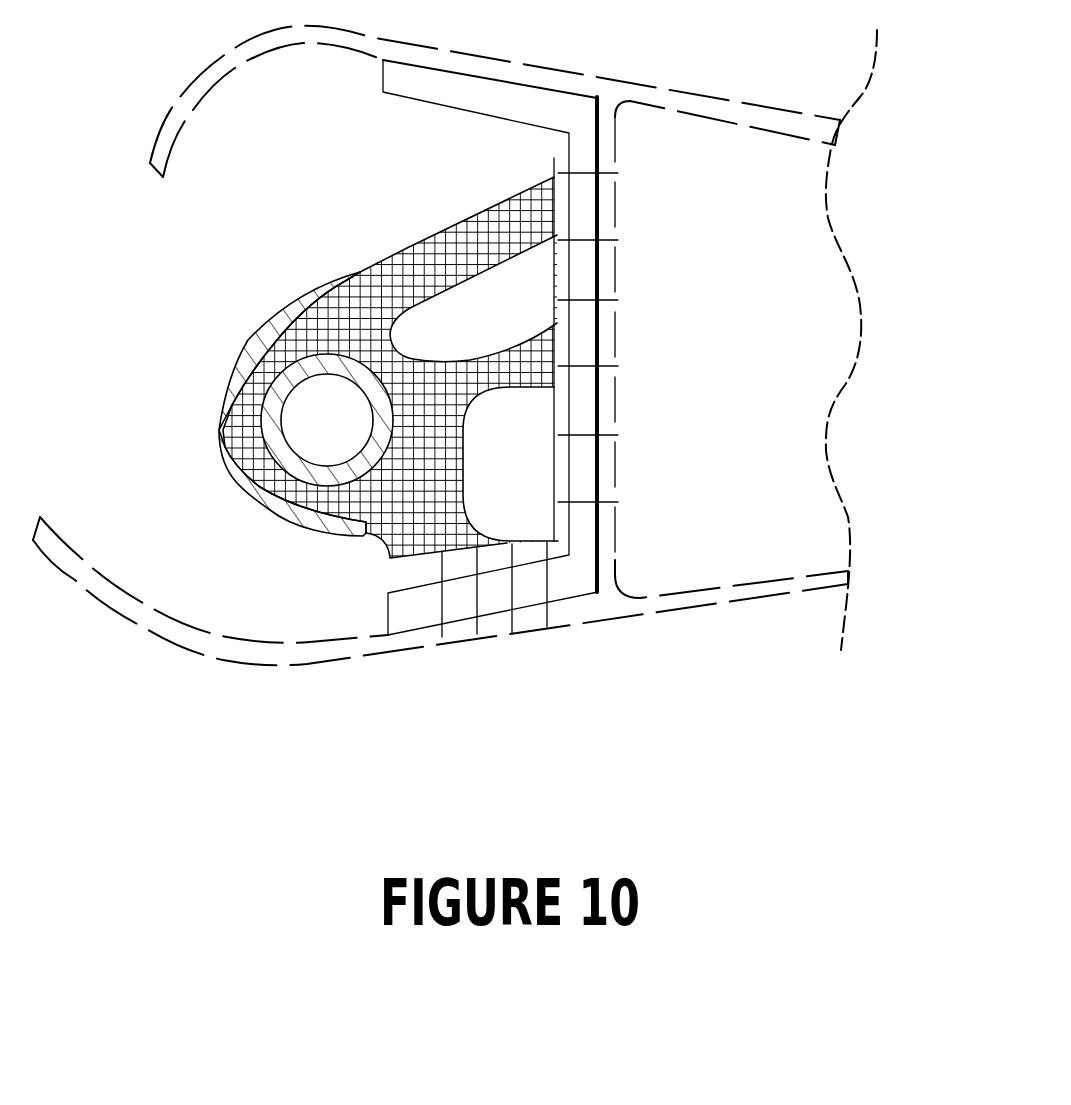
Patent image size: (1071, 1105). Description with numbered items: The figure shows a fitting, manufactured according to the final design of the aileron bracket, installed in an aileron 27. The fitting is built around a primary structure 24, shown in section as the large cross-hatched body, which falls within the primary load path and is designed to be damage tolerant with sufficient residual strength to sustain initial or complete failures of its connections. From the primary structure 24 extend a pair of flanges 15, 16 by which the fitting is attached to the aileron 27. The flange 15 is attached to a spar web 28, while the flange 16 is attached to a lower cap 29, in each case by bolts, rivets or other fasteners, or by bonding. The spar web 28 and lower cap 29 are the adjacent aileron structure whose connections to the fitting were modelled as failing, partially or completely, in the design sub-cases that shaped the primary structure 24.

The flange 15 is at (553, 250).
The flange 16 is at (531, 553).
The primary structure 24 is at (407, 249).
The aileron 27 is at (688, 100).
The spar web 28 is at (599, 212).
The lower cap 29 is at (388, 613).